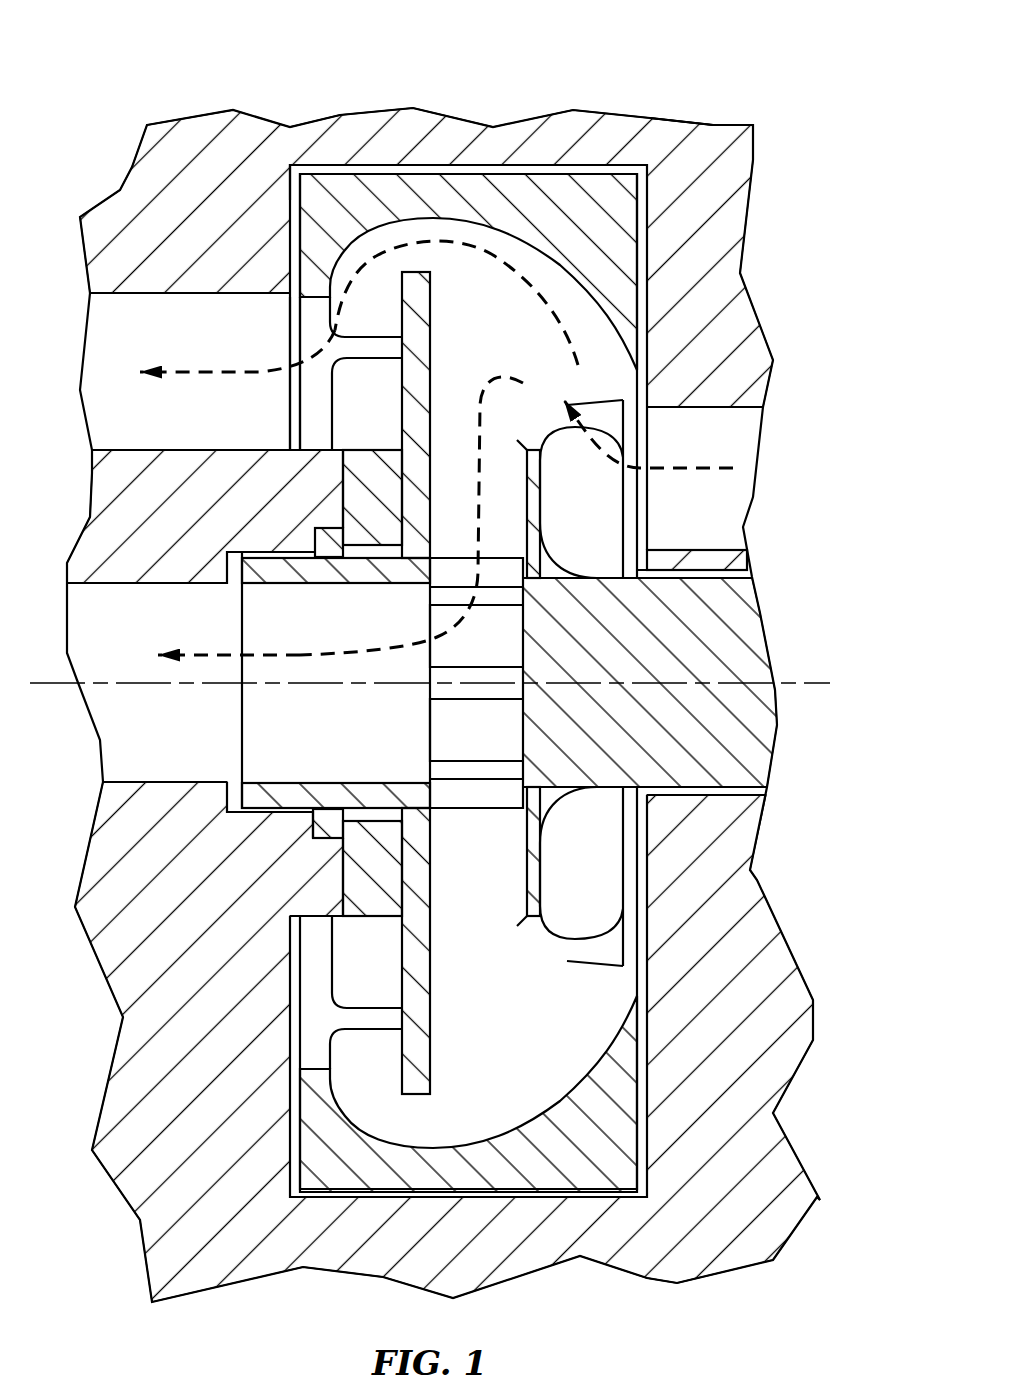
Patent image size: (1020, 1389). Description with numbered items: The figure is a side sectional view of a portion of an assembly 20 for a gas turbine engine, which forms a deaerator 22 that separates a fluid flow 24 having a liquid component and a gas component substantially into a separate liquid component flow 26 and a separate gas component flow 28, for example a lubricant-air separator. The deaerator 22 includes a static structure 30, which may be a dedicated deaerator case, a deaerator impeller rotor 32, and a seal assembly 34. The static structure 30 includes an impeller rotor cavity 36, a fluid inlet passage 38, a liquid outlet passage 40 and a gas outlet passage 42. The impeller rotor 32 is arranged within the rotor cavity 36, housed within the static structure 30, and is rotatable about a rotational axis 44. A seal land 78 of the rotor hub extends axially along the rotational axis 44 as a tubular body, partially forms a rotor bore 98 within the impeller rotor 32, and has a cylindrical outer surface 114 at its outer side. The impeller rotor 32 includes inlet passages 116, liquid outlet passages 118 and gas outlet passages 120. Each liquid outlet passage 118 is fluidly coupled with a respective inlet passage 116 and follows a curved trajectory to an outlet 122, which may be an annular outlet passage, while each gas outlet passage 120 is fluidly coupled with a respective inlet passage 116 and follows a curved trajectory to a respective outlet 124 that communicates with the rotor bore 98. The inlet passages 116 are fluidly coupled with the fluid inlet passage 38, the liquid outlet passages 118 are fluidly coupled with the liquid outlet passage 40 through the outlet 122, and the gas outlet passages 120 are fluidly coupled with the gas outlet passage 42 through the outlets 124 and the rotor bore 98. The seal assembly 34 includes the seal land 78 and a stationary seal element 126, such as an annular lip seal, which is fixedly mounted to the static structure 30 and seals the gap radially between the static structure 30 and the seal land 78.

The assembly 20 is at (762, 63).
The deaerator 22 is at (772, 78).
The fluid flow 24 is at (700, 470).
The liquid component flow 26 is at (213, 370).
The gas component flow 28 is at (215, 648).
The static structure 30 is at (758, 166).
The deaerator impeller rotor 32 is at (492, 166).
The seal assembly 34 is at (306, 832).
The impeller rotor cavity 36 is at (296, 176).
The fluid inlet passage 38 is at (743, 437).
The liquid outlet passage 40 is at (108, 418).
The gas outlet passage 42 is at (127, 748).
The rotational axis 44 is at (825, 686).
The seal land 78 is at (291, 777).
The rotor bore 98 is at (277, 700).
The outer surface 114 is at (404, 822).
The inlet passages 116 is at (573, 373).
The liquid outlet passages 118 is at (360, 258).
The gas outlet passages 120 is at (452, 437).
The outlet 122 is at (304, 414).
The outlet 124 is at (448, 628).
The seal element 126 is at (337, 815).